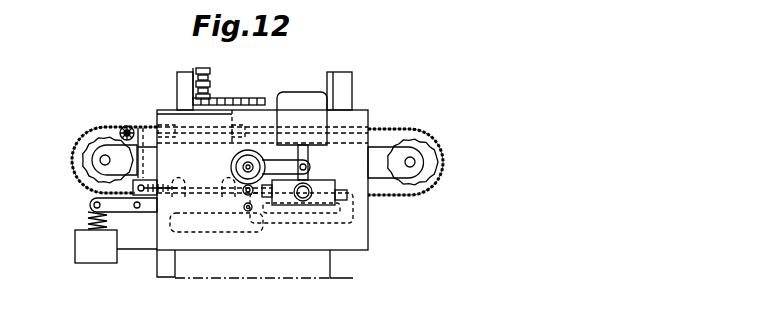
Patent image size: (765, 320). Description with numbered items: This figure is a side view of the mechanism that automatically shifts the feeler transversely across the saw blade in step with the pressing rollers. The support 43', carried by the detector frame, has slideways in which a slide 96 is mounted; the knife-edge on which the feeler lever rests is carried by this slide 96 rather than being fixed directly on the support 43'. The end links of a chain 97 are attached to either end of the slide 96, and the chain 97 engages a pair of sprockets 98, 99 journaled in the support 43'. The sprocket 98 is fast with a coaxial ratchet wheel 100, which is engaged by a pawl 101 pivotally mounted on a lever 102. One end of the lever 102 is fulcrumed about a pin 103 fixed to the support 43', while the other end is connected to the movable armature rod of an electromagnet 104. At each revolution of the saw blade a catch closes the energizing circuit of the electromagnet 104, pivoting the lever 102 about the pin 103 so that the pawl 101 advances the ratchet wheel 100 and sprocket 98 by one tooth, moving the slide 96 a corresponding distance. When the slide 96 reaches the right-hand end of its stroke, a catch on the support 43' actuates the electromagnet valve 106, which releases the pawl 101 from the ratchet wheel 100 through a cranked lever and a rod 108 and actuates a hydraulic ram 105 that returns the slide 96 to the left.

The slide 96 is at (188, 117).
The chain 97 is at (410, 130).
The sprocket 98 is at (73, 168).
The sprocket 99 is at (432, 165).
The ratchet wheel 100 is at (78, 141).
The pawl 101 is at (129, 126).
The lever 102 is at (113, 206).
The pin 103 is at (250, 211).
The electromagnet 104 is at (97, 250).
The hydraulic ram 105 is at (167, 240).
The electromagnet valve 106 is at (300, 105).
The rod 108 is at (271, 175).
The support 43' is at (389, 233).